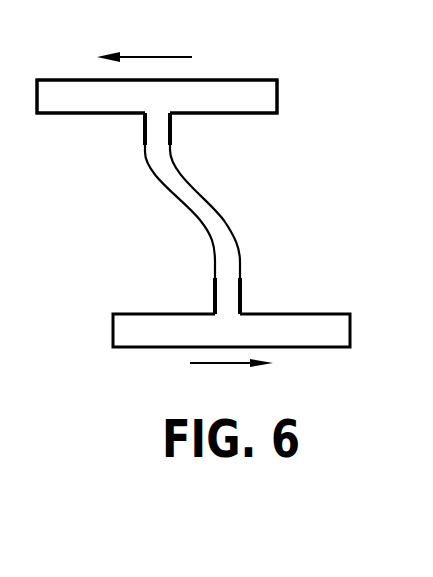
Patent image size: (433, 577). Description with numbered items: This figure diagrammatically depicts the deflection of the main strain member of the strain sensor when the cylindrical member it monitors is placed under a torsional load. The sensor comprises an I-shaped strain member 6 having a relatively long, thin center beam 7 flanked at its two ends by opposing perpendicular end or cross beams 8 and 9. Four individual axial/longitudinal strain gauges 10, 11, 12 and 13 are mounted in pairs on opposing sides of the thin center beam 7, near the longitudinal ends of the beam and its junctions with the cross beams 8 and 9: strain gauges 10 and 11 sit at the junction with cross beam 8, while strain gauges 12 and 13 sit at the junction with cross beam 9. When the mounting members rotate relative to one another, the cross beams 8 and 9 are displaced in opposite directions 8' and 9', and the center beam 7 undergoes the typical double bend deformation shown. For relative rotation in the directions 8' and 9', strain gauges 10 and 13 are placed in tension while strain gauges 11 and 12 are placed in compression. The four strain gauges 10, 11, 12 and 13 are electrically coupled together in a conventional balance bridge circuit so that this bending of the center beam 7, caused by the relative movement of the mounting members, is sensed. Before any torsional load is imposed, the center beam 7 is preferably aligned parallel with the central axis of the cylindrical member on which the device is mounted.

The I-shaped strain member 6 is at (280, 78).
The center beam 7 is at (200, 220).
The cross beam 8 is at (157, 96).
The cross beam 9 is at (231, 330).
The strain gauge 10 is at (143, 124).
The strain gauge 11 is at (172, 124).
The strain gauge 12 is at (214, 298).
The strain gauge 13 is at (242, 290).
The direction of relative rotation 8' is at (145, 39).
The direction of relative rotation 9' is at (221, 381).